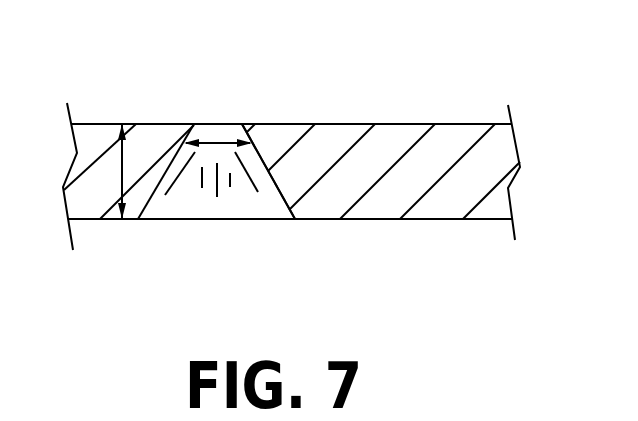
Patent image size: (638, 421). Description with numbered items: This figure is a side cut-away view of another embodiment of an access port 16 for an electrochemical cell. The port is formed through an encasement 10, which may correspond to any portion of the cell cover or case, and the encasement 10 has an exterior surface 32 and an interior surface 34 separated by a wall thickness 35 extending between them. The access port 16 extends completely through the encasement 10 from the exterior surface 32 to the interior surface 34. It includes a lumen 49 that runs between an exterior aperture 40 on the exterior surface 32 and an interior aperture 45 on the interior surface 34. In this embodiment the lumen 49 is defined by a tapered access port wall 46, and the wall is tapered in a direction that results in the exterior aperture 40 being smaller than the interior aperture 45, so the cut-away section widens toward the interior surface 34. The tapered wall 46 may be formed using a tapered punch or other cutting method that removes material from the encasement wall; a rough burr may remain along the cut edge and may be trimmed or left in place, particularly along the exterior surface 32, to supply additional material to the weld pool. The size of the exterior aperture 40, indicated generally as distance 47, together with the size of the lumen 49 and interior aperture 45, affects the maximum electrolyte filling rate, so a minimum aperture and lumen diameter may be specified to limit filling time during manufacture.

The encasement 10 is at (453, 150).
The access port 16 is at (303, 80).
The exterior surface 32 is at (147, 123).
The interior surface 34 is at (144, 219).
The wall thickness 35 is at (122, 175).
The exterior aperture 40 is at (210, 123).
The interior aperture 45 is at (232, 219).
The tapered access port wall 46 is at (275, 185).
The distance 47 is at (223, 143).
The lumen 49 is at (177, 204).